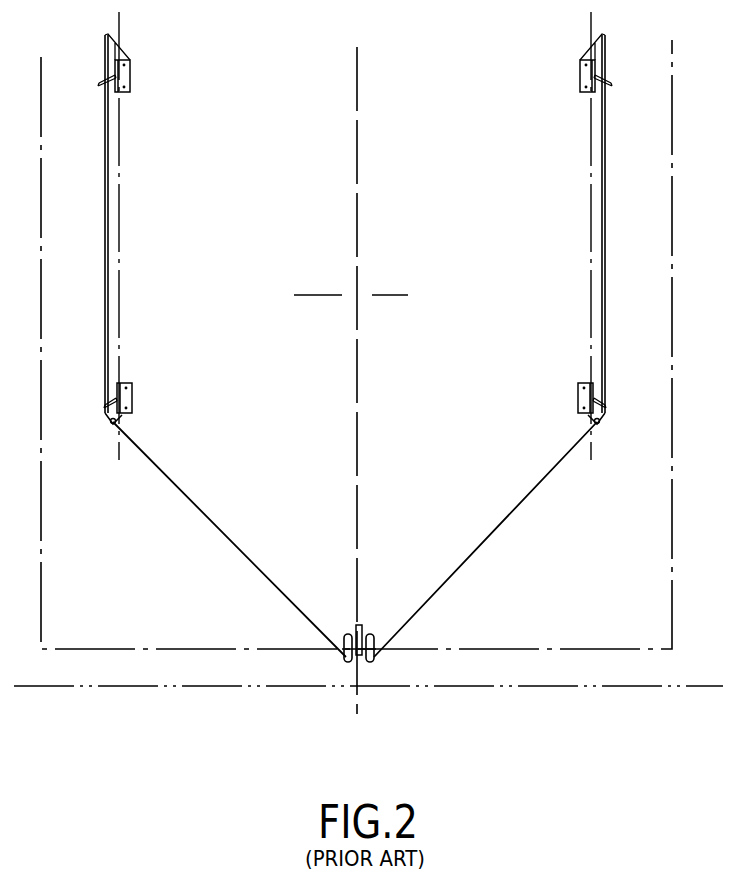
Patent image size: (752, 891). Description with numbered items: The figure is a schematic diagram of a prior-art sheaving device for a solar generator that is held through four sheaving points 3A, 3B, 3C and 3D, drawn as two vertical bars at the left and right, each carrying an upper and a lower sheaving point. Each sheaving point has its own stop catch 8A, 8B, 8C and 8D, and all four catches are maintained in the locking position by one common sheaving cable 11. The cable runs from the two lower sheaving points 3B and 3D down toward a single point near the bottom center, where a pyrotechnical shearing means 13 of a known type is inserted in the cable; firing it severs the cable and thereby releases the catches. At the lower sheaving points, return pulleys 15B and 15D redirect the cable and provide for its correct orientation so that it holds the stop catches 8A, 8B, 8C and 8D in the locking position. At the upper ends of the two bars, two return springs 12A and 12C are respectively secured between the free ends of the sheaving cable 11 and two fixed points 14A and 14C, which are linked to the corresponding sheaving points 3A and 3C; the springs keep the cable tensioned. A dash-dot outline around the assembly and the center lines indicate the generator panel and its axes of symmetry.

The sheaving point 3A is at (127, 73).
The sheaving point 3B is at (134, 397).
The sheaving point 3C is at (557, 73).
The sheaving point 3D is at (556, 398).
The stop catch 8A is at (104, 84).
The stop catch 8B is at (108, 402).
The stop catch 8C is at (628, 92).
The stop catch 8D is at (627, 395).
The return spring 12A is at (107, 63).
The return spring 12C is at (633, 224).
The fixed point 14A is at (108, 34).
The fixed point 14C is at (622, 37).
The return pulley 15B is at (112, 424).
The return pulley 15D is at (626, 441).
The sheaving cable 11 is at (263, 571).
The pyrotechnical shearing means 13 is at (363, 624).